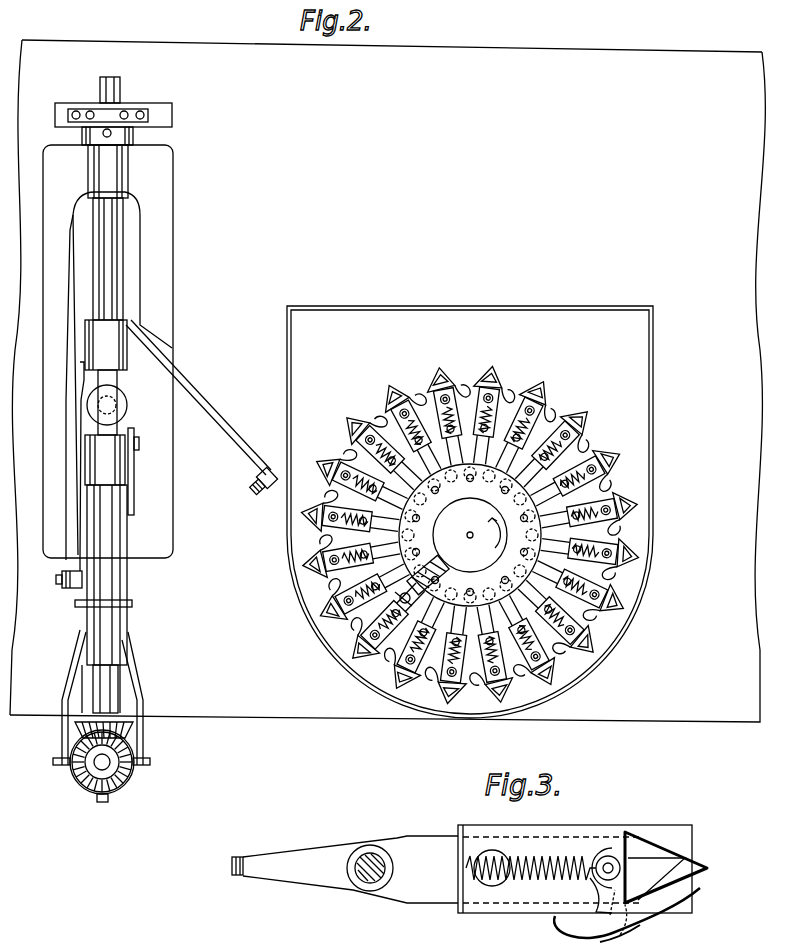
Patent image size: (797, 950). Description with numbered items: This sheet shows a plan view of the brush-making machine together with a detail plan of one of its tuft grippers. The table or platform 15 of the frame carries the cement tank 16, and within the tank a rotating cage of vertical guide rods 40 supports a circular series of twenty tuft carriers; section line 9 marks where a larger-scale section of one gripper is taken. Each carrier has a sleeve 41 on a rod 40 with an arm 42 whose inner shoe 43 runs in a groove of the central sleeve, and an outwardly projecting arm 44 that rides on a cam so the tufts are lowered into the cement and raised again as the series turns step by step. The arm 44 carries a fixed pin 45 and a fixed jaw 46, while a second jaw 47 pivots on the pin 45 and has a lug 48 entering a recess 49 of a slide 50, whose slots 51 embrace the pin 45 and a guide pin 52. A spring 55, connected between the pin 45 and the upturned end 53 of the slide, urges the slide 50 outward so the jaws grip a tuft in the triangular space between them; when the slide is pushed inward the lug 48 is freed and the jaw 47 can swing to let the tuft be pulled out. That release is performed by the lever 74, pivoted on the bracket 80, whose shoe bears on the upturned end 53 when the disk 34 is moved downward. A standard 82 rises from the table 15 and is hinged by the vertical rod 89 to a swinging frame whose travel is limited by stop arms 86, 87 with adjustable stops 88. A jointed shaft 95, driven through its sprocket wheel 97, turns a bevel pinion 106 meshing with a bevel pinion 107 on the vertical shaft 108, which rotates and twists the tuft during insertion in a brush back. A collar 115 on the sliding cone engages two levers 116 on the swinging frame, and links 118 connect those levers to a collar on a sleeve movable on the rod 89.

In FIG. 2, the section line 9 is at (583, 415).
In FIG. 2, the table or platform 15 is at (727, 712).
In FIG. 2, the cement tank 16 is at (655, 450).
In FIG. 2, the disk 34 is at (407, 467).
In FIG. 2, the guide rod 40 is at (477, 583).
In FIG. 3, the guide rod 40 is at (363, 855).
In FIG. 3, the sleeve 41 is at (382, 848).
In FIG. 3, the arm 42 is at (302, 856).
In FIG. 3, the shoe 43 is at (238, 858).
In FIG. 2, the outwardly projecting arm 44 is at (480, 455).
In FIG. 3, the outwardly projecting arm 44 is at (440, 895).
In FIG. 2, the fixed pin 45 is at (620, 548).
In FIG. 3, the fixed pin 45 is at (604, 856).
In FIG. 2, the fixed jaw 46 is at (585, 452).
In FIG. 3, the fixed jaw 46 is at (638, 818).
In FIG. 2, the pivoted jaw 47 is at (612, 470).
In FIG. 3, the pivoted jaw 47 is at (675, 895).
In FIG. 3, the lug 48 is at (626, 937).
In FIG. 3, the recess 49 is at (700, 862).
In FIG. 2, the slide 50 is at (560, 505).
In FIG. 3, the slide 50 is at (505, 912).
In FIG. 2, the slots 51 is at (610, 565).
In FIG. 3, the slots 51 is at (515, 858).
In FIG. 3, the guide pin 52 is at (531, 880).
In FIG. 3, the upturned end 53 is at (472, 812).
In FIG. 3, the spring 55 is at (545, 860).
In FIG. 2, the lever 74 is at (400, 598).
In FIG. 2, the bracket 80 is at (422, 573).
In FIG. 2, the standard 82 is at (122, 212).
In FIG. 2, the stop arm 86 is at (70, 472).
In FIG. 2, the stop arm 87 is at (200, 400).
In FIG. 2, the adjustable stop 88 is at (60, 578).
In FIG. 2, the vertical rod 89 is at (118, 406).
In FIG. 2, the jointed shaft 95 is at (110, 245).
In FIG. 2, the sprocket wheel 97 is at (128, 112).
In FIG. 2, the bevel pinion 106 is at (130, 725).
In FIG. 2, the bevel pinion 107 is at (135, 778).
In FIG. 2, the vertical shaft 108 is at (100, 765).
In FIG. 2, the collar 115 is at (65, 768).
In FIG. 2, the lever 116 is at (70, 672).
In FIG. 2, the link 118 is at (136, 455).